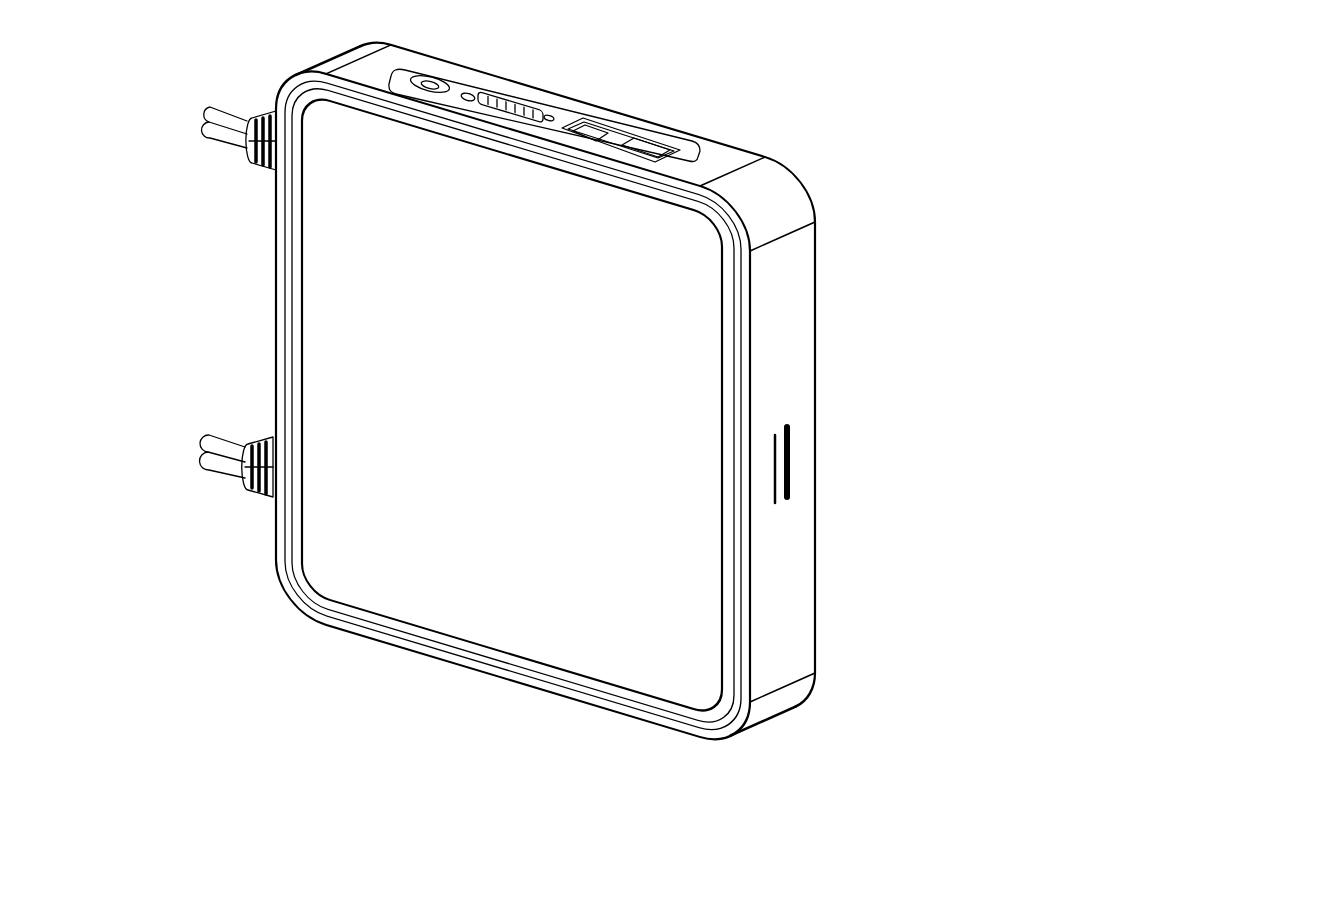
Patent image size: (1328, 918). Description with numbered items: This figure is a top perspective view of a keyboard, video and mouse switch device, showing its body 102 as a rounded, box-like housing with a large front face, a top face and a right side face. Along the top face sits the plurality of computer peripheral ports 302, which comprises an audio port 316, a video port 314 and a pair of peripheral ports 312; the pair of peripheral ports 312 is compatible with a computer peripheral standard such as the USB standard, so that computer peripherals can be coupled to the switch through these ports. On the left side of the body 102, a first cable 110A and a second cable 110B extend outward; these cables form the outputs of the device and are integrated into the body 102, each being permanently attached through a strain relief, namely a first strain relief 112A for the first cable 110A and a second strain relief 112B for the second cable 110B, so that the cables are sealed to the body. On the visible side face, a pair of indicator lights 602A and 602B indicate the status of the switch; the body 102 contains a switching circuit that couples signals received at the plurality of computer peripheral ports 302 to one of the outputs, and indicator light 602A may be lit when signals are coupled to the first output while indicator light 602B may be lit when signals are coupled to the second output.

The plurality of computer peripheral ports 302 is at (668, 33).
The body 102 is at (815, 648).
The audio port 316 is at (430, 77).
The video port 314 is at (514, 100).
The pair of peripheral ports 312 is at (628, 140).
The indicator light 602A is at (775, 503).
The indicator light 602B is at (790, 462).
The first cable 110A is at (205, 440).
The second cable 110B is at (208, 118).
The first strain relief 112A is at (240, 494).
The second strain relief 112B is at (250, 168).